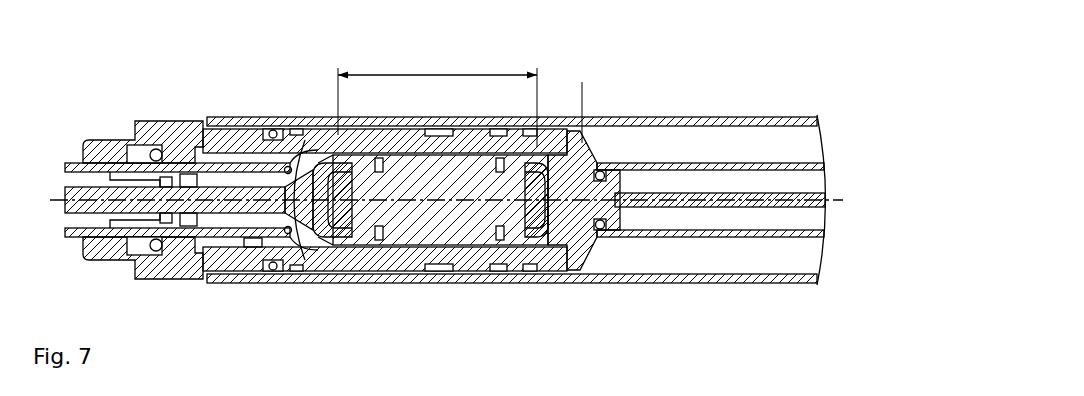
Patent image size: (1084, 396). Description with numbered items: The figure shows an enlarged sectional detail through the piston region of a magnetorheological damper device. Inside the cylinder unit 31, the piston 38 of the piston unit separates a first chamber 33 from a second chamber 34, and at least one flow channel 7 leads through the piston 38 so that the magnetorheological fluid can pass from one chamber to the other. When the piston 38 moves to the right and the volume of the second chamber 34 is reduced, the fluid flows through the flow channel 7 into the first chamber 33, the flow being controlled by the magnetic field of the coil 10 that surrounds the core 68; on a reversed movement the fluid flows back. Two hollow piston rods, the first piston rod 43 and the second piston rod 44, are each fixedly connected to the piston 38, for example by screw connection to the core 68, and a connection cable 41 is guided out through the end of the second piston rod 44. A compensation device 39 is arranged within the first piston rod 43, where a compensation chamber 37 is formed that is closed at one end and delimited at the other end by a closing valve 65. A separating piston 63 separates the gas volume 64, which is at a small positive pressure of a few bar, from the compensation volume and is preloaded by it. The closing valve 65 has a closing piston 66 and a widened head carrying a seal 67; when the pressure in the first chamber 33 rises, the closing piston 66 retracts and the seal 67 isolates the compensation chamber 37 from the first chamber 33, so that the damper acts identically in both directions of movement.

The flow channel 7 is at (408, 153).
The coil 10 is at (343, 237).
The cylinder unit 31 is at (623, 284).
The first chamber 33 is at (188, 121).
The second chamber 34 is at (658, 140).
The compensation chamber 37 is at (220, 218).
The piston 38 is at (432, 129).
The compensation device 39 is at (100, 234).
The connection cable 41 is at (807, 196).
The first piston rod 43 is at (72, 165).
The second piston rod 44 is at (728, 168).
The separating piston 63 is at (110, 180).
The gas volume 64 is at (82, 218).
The closing valve 65 is at (253, 248).
The closing piston 66 is at (277, 187).
The seal 67 is at (288, 166).
The core 68 is at (453, 232).